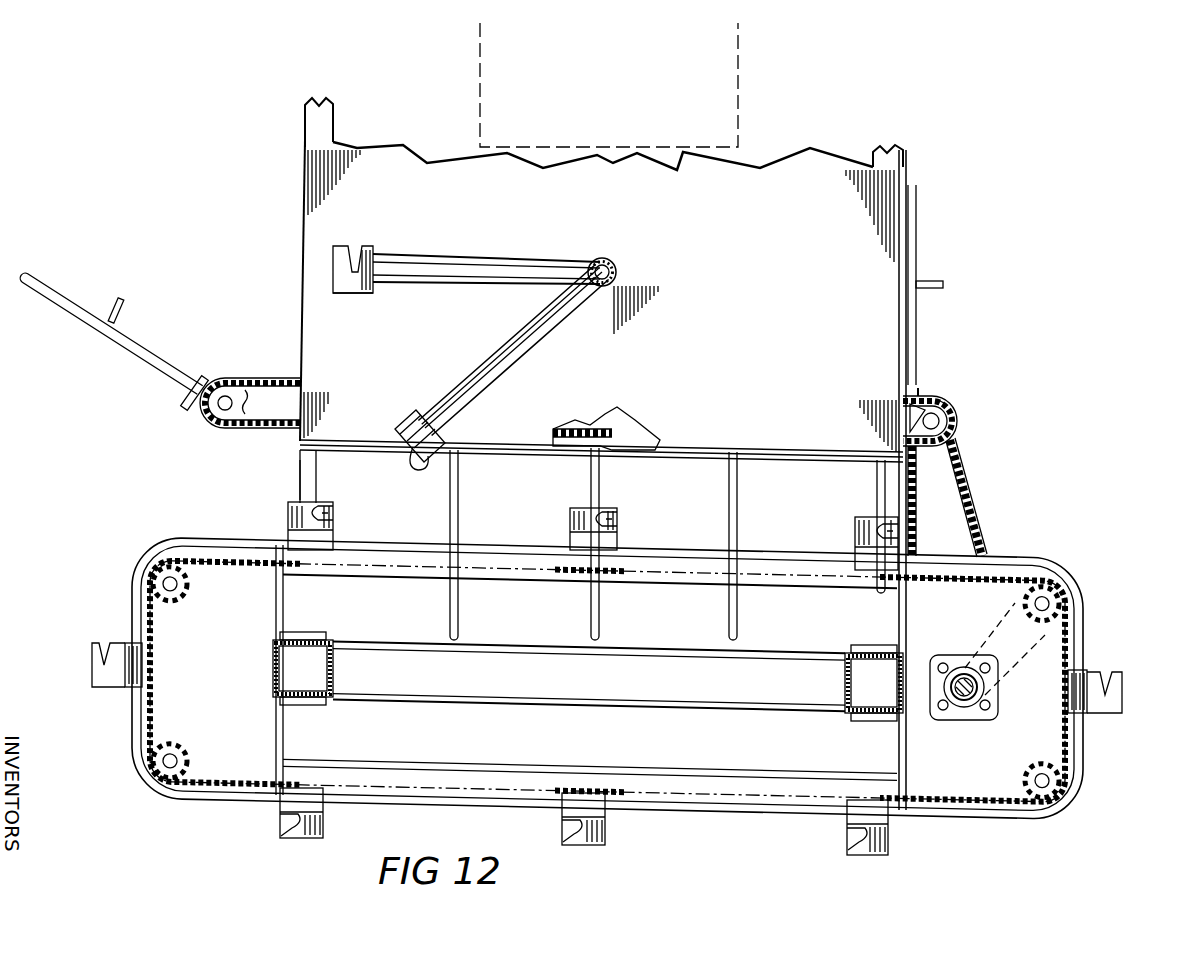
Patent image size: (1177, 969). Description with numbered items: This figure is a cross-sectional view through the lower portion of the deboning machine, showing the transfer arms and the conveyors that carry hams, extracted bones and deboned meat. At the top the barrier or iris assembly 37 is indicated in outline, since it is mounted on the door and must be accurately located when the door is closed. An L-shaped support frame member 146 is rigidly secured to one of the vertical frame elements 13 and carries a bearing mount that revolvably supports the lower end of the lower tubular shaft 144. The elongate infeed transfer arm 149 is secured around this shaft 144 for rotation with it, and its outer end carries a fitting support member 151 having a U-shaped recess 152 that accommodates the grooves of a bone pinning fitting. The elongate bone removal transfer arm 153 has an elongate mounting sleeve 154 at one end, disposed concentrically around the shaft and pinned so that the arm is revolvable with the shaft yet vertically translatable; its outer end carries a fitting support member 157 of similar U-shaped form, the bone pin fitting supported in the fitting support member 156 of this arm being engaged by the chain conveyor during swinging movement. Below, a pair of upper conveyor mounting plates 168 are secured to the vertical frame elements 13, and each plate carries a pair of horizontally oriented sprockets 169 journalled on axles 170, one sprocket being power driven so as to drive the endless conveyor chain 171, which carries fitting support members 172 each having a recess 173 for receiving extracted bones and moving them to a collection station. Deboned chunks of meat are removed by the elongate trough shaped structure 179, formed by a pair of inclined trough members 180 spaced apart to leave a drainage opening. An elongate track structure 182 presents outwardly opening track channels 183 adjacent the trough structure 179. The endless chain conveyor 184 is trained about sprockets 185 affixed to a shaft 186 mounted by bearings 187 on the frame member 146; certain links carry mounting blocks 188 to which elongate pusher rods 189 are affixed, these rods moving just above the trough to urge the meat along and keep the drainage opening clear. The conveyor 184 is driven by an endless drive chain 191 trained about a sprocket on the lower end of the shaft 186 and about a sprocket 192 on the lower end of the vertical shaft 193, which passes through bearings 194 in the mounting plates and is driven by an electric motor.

The barrier or iris assembly 37 is at (742, 78).
The L-shaped support frame member 146 is at (305, 130).
The pusher rod 189 is at (916, 229).
The U-shaped recess 152 is at (354, 268).
The fitting support member 151 is at (366, 294).
The infeed transfer arm 149 is at (528, 261).
The mounting sleeve 154 is at (603, 259).
The lower tubular shaft 144 is at (616, 272).
The bone removal transfer arm 153 is at (568, 313).
The fitting support member 156 is at (400, 448).
The fitting support member 157 is at (426, 468).
The mounting block 188 is at (222, 380).
The shaft 186 is at (940, 422).
The endless chain conveyor 184 is at (954, 410).
The sprocket 185 is at (930, 393).
The bearing 187 is at (946, 400).
The endless drive chain 191 is at (956, 448).
The trough shaped structure 179 is at (290, 474).
The track structure 182 is at (565, 447).
The track channel 183 is at (626, 451).
The upper conveyor mounting plate 168 is at (1014, 558).
The endless conveyor chain 171 is at (1088, 616).
The sprocket 169 is at (185, 596).
The axle 170 is at (178, 584).
The inclined trough member 180 is at (690, 625).
The vertical frame element 13 is at (335, 689).
The fitting support member 172 is at (290, 536).
The recess 173 is at (320, 516).
The bearing 194 is at (955, 667).
The shaft 193 is at (966, 700).
The sprocket 192 is at (1033, 673).